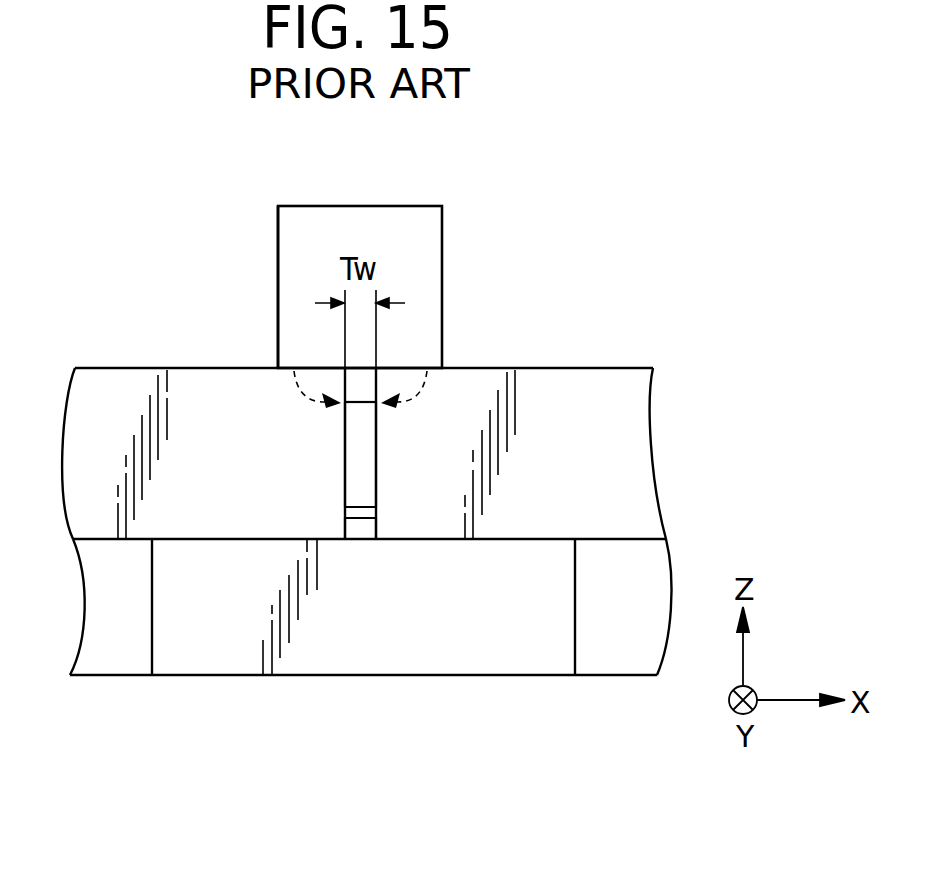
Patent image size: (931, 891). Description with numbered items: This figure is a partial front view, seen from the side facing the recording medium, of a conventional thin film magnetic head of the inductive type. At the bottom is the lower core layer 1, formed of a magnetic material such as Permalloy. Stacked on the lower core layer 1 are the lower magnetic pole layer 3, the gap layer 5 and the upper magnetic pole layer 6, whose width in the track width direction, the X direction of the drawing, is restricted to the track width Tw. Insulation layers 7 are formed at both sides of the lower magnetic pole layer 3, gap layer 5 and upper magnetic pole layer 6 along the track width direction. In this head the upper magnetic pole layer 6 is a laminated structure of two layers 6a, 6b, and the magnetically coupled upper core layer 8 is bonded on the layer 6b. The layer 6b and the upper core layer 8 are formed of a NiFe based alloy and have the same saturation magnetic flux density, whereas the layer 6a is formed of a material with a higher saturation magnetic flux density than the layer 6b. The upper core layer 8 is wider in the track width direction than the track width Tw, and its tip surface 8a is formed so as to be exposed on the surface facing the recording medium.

The lower core layer 1 is at (497, 628).
The lower magnetic pole layer 3 is at (357, 530).
The gap layer 5 is at (356, 512).
The upper magnetic pole layer 6 is at (289, 453).
The layer 6a is at (353, 443).
The layer 6b is at (362, 394).
The insulation layer 7 is at (100, 417).
The upper core layer 8 is at (425, 262).
The tip surface 8a is at (285, 252).